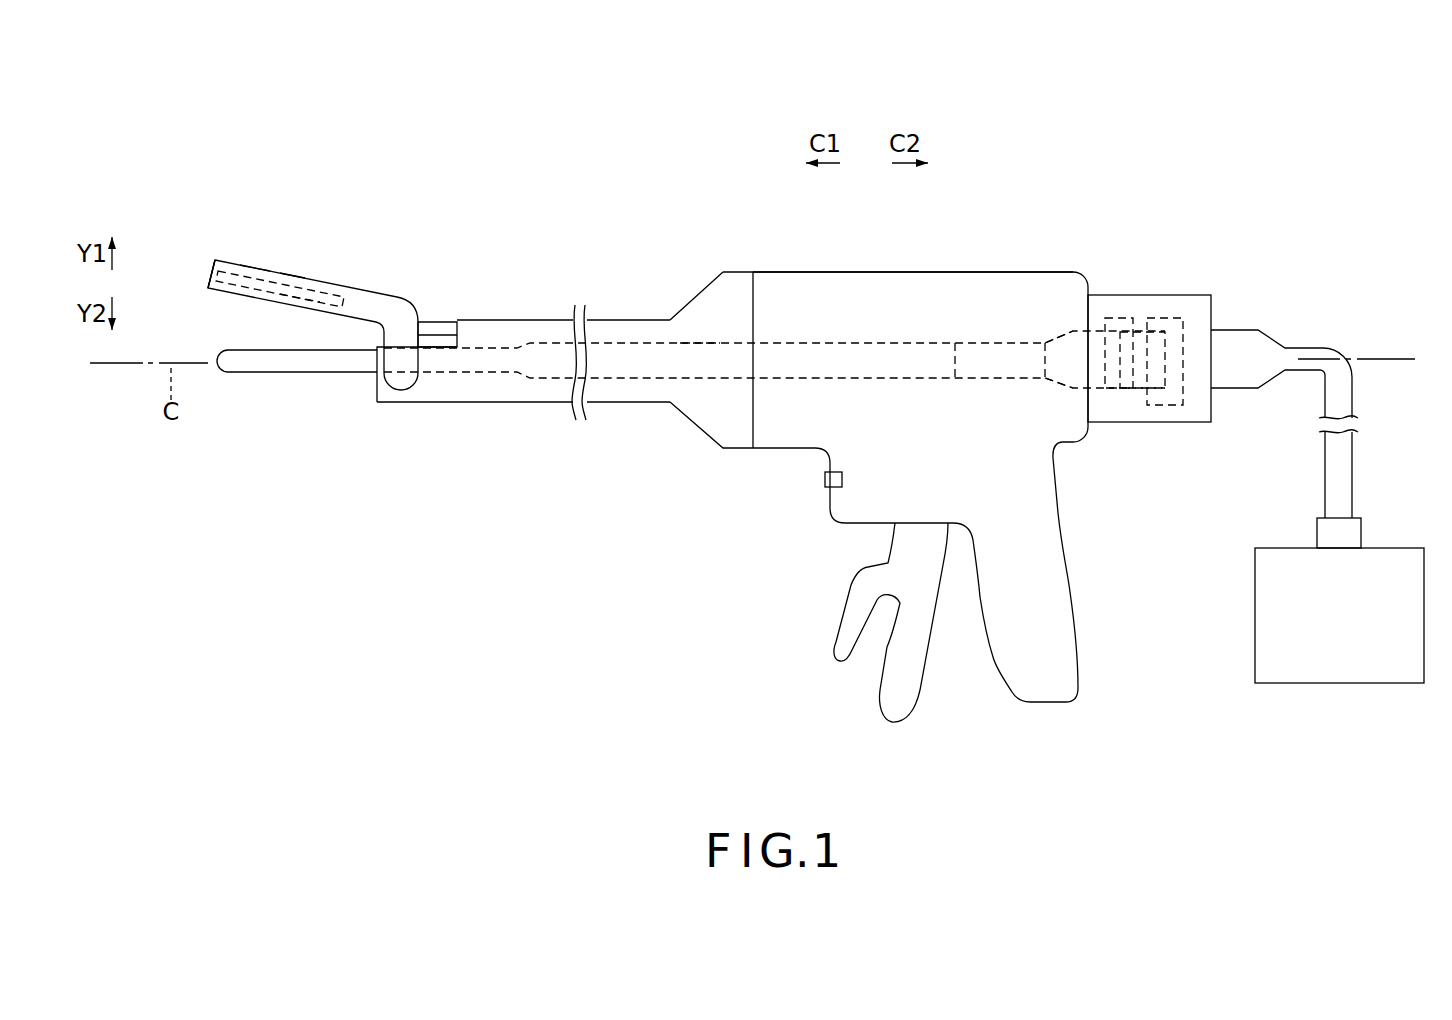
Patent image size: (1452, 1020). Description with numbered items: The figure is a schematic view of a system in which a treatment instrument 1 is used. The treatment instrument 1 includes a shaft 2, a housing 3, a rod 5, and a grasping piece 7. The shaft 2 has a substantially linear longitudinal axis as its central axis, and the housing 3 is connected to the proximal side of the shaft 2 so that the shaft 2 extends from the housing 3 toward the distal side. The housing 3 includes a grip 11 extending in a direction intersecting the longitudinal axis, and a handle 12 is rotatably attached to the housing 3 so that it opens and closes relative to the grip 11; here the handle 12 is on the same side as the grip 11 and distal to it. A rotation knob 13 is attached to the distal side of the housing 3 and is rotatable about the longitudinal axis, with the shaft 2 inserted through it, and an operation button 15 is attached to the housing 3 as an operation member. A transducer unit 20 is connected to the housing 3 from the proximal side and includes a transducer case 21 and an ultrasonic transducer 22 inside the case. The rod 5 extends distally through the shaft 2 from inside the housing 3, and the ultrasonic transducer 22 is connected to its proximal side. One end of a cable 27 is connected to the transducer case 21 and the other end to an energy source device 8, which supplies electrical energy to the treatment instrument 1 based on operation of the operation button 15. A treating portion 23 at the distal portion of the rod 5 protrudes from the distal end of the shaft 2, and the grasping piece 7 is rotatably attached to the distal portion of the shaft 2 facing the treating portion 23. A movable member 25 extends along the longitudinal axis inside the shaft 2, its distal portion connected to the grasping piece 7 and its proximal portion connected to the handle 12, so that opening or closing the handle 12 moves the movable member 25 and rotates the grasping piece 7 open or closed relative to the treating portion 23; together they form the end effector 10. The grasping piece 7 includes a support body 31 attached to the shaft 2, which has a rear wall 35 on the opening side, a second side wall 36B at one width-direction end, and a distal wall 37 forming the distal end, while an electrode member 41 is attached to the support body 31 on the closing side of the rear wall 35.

The treatment instrument 1 is at (750, 254).
The shaft 2 is at (618, 333).
The housing 3 is at (980, 294).
The rod 5 is at (713, 360).
The grasping piece 7 is at (333, 277).
The energy source device 8 is at (1404, 568).
The end effector 10 is at (181, 275).
The grip 11 is at (1055, 562).
The handle 12 is at (914, 678).
The rotation knob 13 is at (688, 312).
The operation button 15 is at (824, 480).
The transducer unit 20 is at (1137, 309).
The transducer case 21 is at (1208, 296).
The ultrasonic transducer 22 is at (1064, 368).
The treating portion 23 is at (294, 375).
The movable member 25 is at (437, 326).
The cable 27 is at (1245, 347).
The support body 31 is at (255, 268).
The rear wall 35 is at (292, 276).
The second side wall 36B is at (296, 302).
The distal wall 37 is at (209, 285).
The electrode member 41 is at (233, 300).